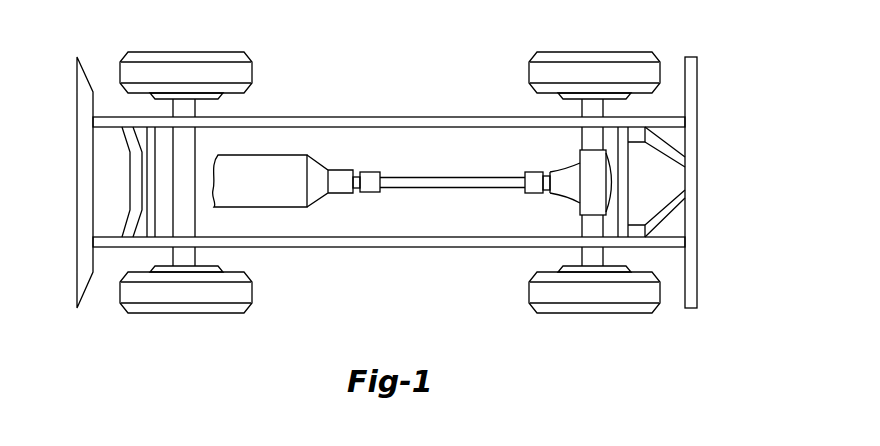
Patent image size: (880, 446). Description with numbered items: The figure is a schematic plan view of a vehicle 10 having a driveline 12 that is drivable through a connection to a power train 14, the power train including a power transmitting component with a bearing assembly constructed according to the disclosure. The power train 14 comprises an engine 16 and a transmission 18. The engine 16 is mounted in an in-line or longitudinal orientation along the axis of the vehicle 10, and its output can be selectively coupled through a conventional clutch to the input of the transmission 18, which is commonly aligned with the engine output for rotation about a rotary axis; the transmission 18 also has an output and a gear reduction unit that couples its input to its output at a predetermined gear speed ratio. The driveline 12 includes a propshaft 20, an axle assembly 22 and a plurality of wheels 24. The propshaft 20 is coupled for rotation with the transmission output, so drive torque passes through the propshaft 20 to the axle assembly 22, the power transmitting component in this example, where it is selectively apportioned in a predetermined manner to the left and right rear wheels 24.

The vehicle 10 is at (348, 65).
The driveline 12 is at (540, 158).
The power train 14 is at (271, 216).
The engine 16 is at (268, 193).
The transmission 18 is at (340, 178).
The propshaft 20 is at (428, 183).
The axle assembly 22 is at (573, 208).
The wheels 24 is at (663, 40).